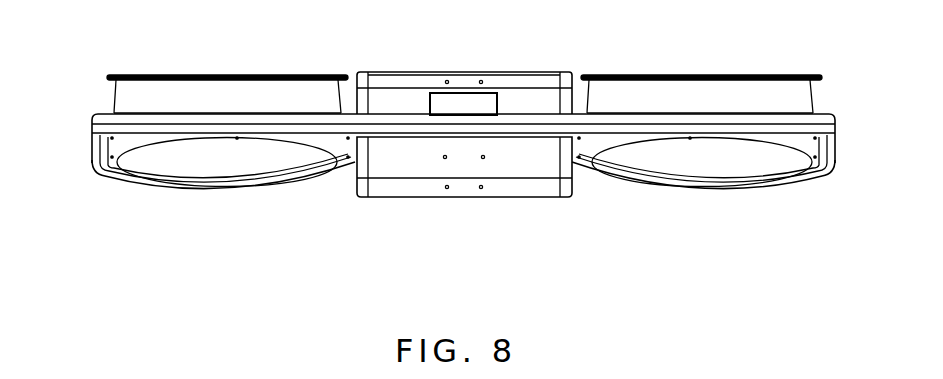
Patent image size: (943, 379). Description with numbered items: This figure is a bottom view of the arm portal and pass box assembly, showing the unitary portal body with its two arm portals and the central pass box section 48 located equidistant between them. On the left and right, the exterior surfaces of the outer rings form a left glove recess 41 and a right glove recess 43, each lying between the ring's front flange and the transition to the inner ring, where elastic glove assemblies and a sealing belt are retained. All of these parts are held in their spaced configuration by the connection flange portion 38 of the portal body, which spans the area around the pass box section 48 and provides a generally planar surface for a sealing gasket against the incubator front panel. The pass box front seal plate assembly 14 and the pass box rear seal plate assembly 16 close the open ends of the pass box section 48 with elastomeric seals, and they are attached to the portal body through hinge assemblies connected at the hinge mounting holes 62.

The pass box front seal plate assembly 14 is at (530, 80).
The pass box rear seal plate assembly 16 is at (510, 187).
The connection flange portion 38 is at (104, 167).
The left glove recess 41 is at (112, 100).
The right glove recess 43 is at (818, 100).
The pass box section 48 is at (407, 157).
The hinge mounting holes 62 is at (447, 80).